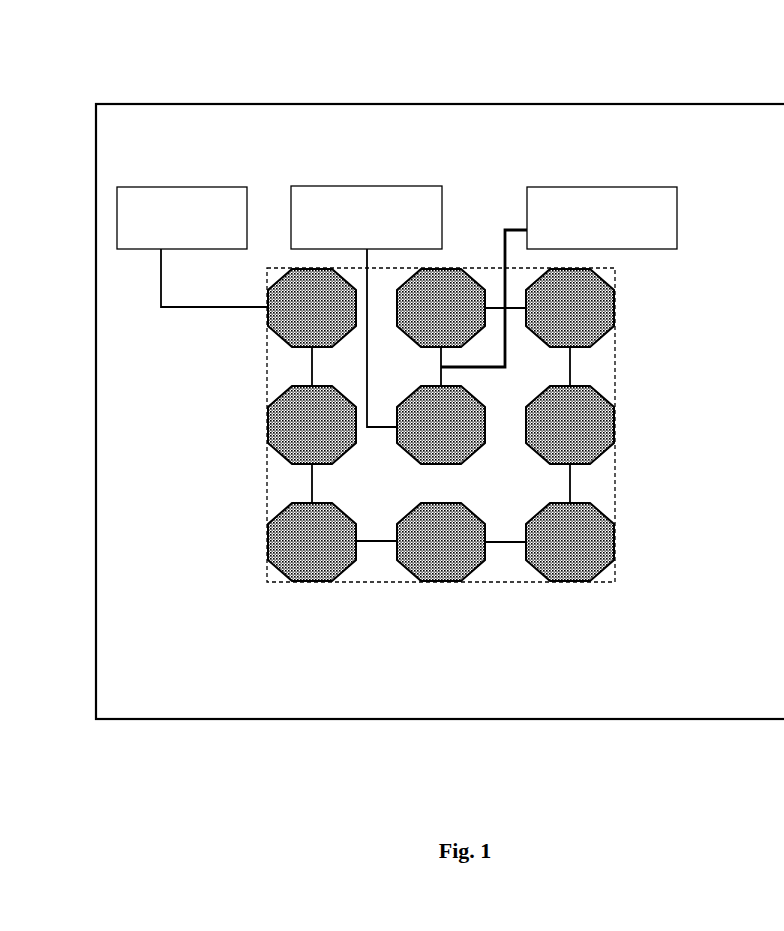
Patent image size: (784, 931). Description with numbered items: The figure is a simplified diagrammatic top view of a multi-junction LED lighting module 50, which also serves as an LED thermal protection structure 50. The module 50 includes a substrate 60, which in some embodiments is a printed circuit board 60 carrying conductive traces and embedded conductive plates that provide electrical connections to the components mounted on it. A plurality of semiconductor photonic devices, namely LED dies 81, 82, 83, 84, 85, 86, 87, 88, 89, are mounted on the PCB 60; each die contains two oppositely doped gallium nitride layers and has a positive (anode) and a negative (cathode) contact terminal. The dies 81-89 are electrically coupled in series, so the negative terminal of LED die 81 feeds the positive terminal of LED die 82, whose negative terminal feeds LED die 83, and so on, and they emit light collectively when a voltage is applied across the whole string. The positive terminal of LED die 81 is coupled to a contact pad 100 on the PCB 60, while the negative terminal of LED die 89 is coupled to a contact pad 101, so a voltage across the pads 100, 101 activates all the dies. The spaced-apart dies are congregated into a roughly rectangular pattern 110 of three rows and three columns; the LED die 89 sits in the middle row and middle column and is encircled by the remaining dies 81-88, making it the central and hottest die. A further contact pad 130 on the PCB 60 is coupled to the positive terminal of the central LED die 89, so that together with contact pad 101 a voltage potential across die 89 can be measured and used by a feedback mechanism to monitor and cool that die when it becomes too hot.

The multi-junction LED lighting module 50 is at (396, 64).
The substrate 60 is at (702, 103).
The contact pad 100 is at (180, 187).
The contact pad 101 is at (357, 187).
The contact pad 130 is at (598, 187).
The roughly rectangular pattern 110 is at (618, 372).
The LED die 81 is at (277, 340).
The LED die 82 is at (277, 455).
The LED die 83 is at (277, 567).
The LED die 84 is at (410, 567).
The LED die 85 is at (540, 565).
The LED die 86 is at (540, 450).
The LED die 87 is at (542, 337).
The LED die 88 is at (412, 338).
The central LED die 89 is at (412, 455).